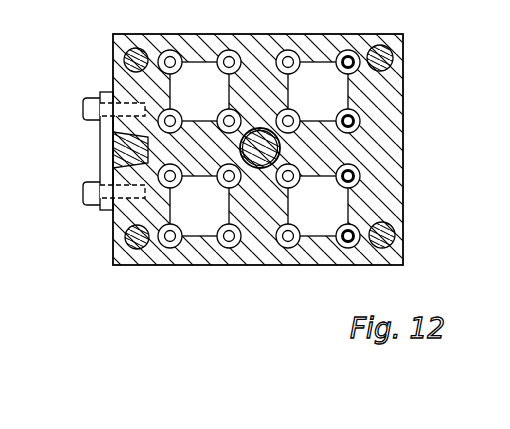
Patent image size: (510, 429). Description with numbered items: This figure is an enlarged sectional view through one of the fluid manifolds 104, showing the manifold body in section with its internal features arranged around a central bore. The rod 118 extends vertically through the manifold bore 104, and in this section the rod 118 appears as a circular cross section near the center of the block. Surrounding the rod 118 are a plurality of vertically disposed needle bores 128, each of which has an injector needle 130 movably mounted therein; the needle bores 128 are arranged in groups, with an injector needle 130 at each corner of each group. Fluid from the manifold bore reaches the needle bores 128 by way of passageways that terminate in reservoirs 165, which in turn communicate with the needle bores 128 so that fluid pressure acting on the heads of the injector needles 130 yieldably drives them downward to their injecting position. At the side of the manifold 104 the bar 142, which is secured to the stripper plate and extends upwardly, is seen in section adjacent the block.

The fluid manifold 104 is at (403, 135).
The rod 118 is at (281, 147).
The needle bore 128 is at (355, 50).
The injector needle 130 is at (214, 55).
The bar 142 is at (118, 151).
The reservoir 165 is at (340, 85).